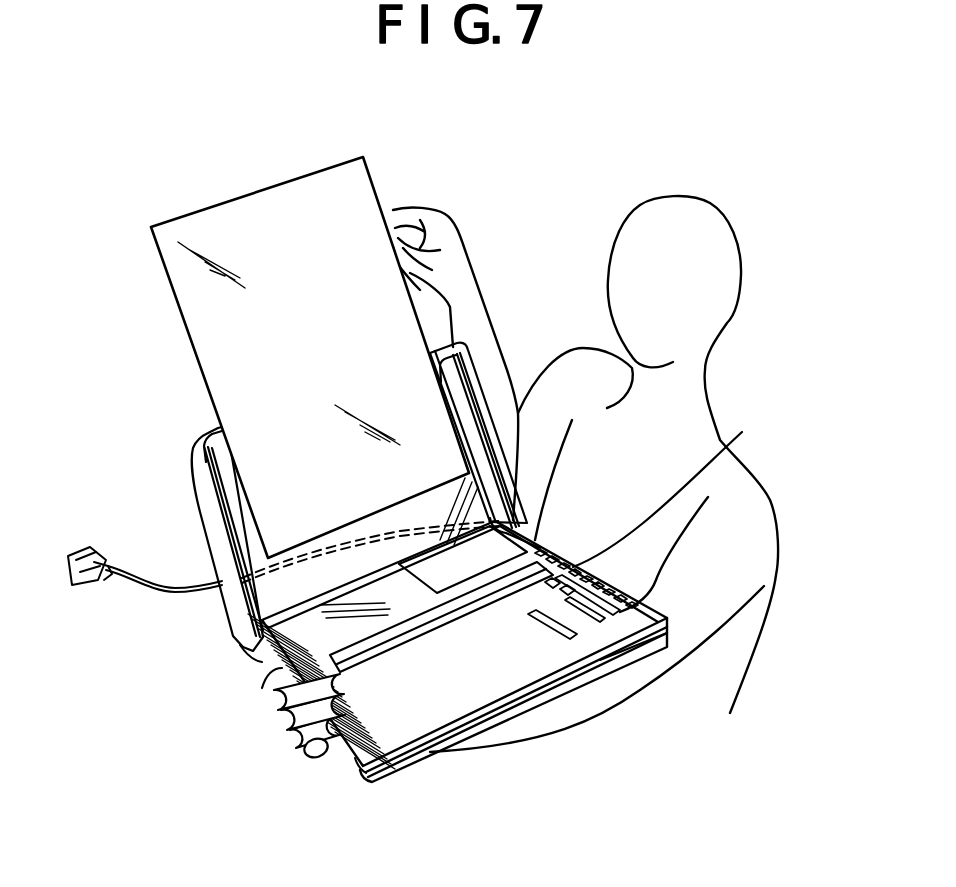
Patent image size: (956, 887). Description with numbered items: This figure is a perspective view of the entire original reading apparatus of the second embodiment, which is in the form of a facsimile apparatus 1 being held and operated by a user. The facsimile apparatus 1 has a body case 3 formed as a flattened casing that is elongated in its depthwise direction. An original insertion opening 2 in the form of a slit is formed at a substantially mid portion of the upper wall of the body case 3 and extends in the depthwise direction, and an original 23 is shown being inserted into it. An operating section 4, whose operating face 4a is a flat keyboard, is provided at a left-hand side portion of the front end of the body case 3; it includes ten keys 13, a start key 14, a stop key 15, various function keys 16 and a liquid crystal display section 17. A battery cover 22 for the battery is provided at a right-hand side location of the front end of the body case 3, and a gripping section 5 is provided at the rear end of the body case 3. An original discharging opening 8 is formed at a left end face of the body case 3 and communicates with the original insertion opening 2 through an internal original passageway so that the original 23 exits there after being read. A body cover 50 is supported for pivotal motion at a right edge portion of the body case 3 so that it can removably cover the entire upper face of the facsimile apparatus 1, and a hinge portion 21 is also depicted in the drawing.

The facsimile apparatus 1 is at (263, 720).
The original insertion opening 2 is at (382, 647).
The body case 3 is at (373, 772).
The operating section 4 is at (668, 673).
The operating face 4a is at (672, 486).
The gripping section 5 is at (357, 747).
The original discharging opening 8 is at (463, 727).
The ten keys 13 is at (643, 597).
The start key 14 is at (615, 615).
The stop key 15 is at (605, 597).
The function keys 16 is at (603, 625).
The liquid crystal display section 17 is at (560, 640).
The hinge 21 is at (260, 663).
The battery cover 22 is at (467, 572).
The original 23 is at (238, 212).
The body cover 50 is at (203, 512).